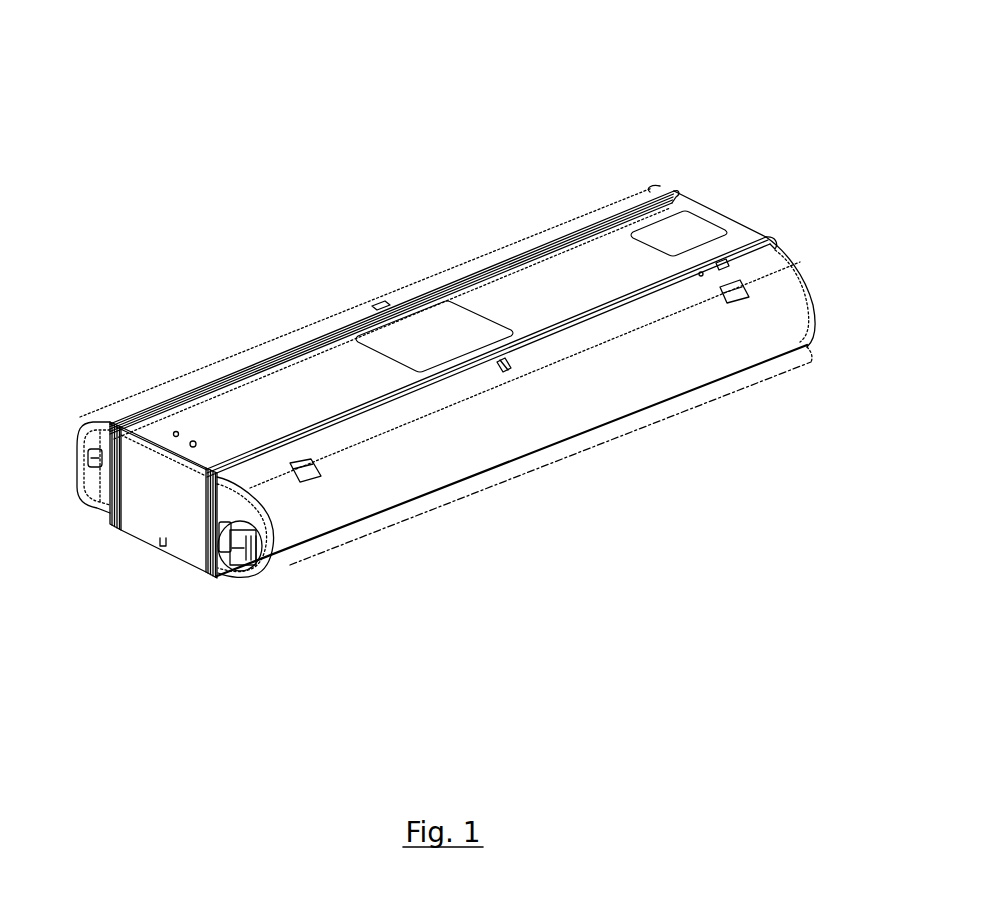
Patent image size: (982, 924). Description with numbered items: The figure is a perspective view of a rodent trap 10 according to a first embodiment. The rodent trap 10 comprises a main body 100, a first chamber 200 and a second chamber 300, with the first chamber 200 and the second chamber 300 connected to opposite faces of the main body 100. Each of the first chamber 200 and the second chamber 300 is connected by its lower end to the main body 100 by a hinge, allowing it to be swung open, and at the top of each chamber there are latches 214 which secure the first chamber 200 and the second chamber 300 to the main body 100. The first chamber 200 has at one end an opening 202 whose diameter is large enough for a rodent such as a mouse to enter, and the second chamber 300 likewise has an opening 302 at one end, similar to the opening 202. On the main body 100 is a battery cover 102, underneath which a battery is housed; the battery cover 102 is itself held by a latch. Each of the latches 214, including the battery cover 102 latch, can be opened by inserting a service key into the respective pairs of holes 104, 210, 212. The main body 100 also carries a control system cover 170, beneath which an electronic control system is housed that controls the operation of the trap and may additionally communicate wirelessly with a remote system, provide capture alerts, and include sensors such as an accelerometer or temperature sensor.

The rodent trap 10 is at (240, 98).
The main body 100 is at (557, 283).
The battery cover 102 is at (223, 407).
The holes 104 is at (175, 433).
The control system cover 170 is at (428, 337).
The first chamber 200 is at (555, 397).
The opening 202 is at (240, 548).
The holes 210 is at (265, 452).
The holes 212 is at (723, 262).
The latches 214 is at (303, 477).
The second chamber 300 is at (78, 424).
The opening 302 is at (100, 469).